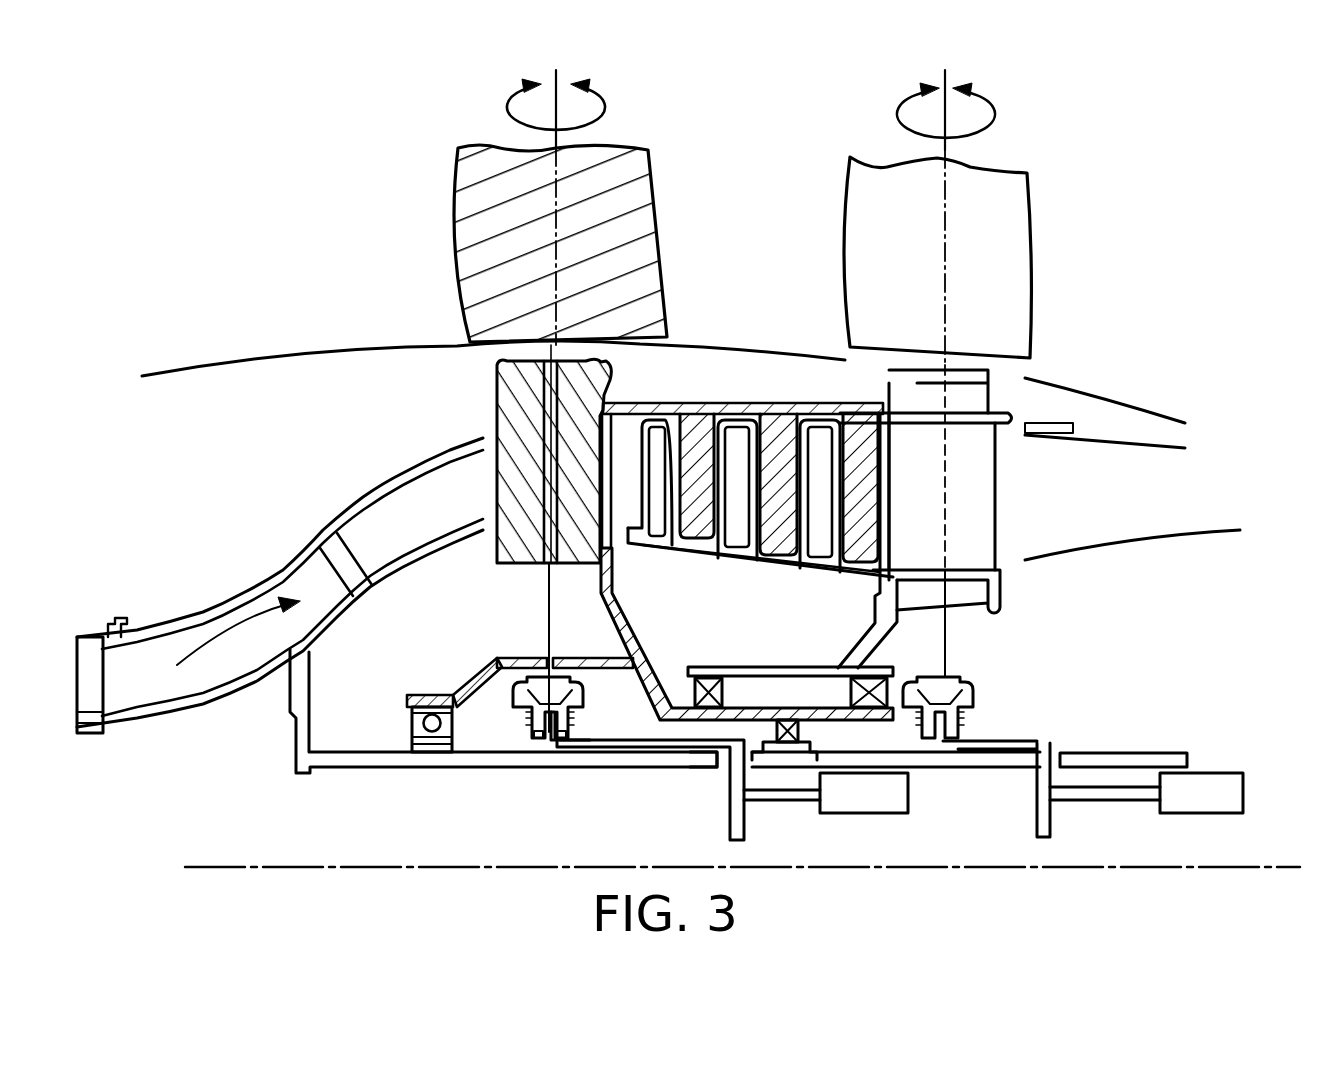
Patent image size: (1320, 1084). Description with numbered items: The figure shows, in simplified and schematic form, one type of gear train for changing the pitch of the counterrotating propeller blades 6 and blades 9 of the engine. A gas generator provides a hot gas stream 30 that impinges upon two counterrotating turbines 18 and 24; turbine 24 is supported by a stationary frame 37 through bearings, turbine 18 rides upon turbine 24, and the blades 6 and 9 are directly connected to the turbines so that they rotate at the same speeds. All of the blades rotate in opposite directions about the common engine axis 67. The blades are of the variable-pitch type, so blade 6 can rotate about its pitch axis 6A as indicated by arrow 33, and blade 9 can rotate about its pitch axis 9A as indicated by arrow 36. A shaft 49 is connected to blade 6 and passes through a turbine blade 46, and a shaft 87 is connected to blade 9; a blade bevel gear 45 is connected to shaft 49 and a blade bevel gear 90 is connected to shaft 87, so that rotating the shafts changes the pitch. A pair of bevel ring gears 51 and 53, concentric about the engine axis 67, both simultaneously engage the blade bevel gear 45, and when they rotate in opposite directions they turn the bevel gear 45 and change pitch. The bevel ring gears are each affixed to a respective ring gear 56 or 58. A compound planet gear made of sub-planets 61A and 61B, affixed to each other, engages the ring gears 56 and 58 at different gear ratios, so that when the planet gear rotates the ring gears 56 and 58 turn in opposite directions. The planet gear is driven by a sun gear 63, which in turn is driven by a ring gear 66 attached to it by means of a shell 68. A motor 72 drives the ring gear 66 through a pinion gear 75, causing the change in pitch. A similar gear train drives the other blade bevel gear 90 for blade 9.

The blades 6 is at (630, 200).
The pitch axis 6A is at (560, 138).
The arrow 33 is at (508, 104).
The blades 9 is at (1000, 244).
The pitch axis 9A is at (950, 150).
The arrow 36 is at (905, 112).
The turbine blade 46 is at (510, 398).
The shaft 49 is at (546, 586).
The turbine 18 is at (699, 427).
The turbine 24 is at (820, 432).
The bevel ring gear 53 is at (615, 672).
The shaft 87 is at (947, 633).
The hot gas stream 30 is at (240, 640).
The stationary frame 37 is at (292, 733).
The ring gear 66 is at (707, 768).
The ring gear 56 is at (533, 708).
The bevel ring gear 51 is at (497, 665).
The blade bevel gear 45 is at (550, 677).
The ring gear 58 is at (572, 712).
The sub-planet 61A is at (536, 735).
The sub-planet 61B is at (564, 728).
The shell 68 is at (634, 752).
The sun gear 63 is at (572, 748).
The pinion gear 75 is at (746, 775).
The blade bevel gear 90 is at (958, 678).
The motor 72 is at (866, 815).
The engine axis 67 is at (340, 865).